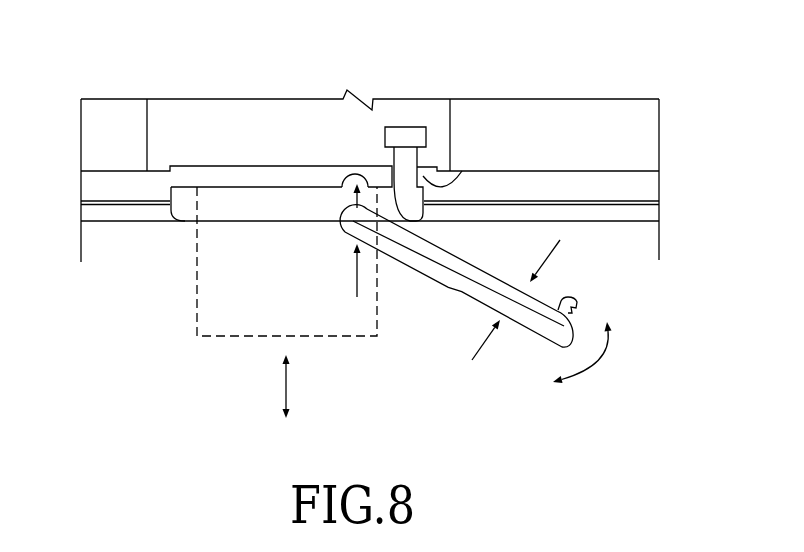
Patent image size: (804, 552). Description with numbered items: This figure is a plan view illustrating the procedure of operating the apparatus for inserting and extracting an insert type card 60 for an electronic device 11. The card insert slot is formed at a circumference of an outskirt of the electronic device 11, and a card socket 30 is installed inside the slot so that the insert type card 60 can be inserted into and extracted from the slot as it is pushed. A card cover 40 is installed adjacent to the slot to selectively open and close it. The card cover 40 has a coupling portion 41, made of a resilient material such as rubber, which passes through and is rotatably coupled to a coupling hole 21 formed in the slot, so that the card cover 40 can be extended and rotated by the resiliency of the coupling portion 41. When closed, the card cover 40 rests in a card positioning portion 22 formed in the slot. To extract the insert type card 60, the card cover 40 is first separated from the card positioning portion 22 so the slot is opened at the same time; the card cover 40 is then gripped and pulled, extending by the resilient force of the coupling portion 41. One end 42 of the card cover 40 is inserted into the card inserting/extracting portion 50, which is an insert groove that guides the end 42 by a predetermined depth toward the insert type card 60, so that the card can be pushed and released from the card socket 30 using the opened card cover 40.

The electronic device 11 is at (602, 178).
The coupling hole 21 is at (462, 172).
The card positioning portion 22 is at (187, 213).
The card socket 30 is at (183, 115).
The card cover 40 is at (543, 327).
The coupling portion 41 is at (405, 150).
The end of card cover 42 is at (350, 233).
The card inserting/extracting portion 50 is at (343, 177).
The insert type card 60 is at (225, 323).